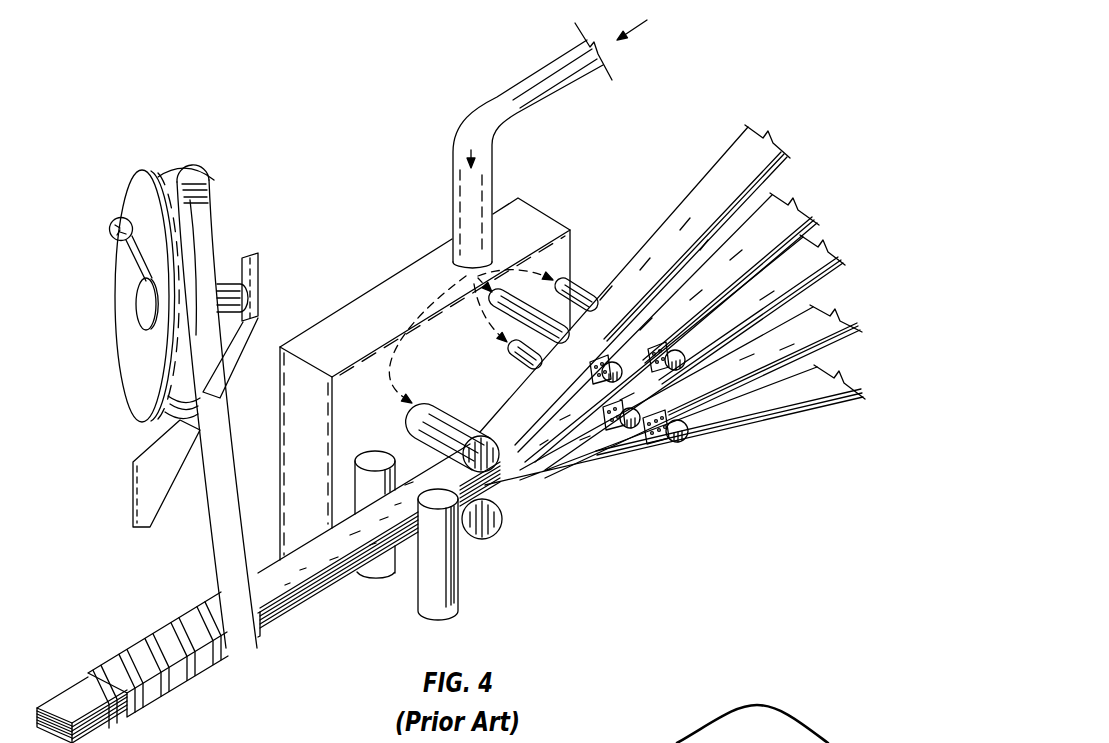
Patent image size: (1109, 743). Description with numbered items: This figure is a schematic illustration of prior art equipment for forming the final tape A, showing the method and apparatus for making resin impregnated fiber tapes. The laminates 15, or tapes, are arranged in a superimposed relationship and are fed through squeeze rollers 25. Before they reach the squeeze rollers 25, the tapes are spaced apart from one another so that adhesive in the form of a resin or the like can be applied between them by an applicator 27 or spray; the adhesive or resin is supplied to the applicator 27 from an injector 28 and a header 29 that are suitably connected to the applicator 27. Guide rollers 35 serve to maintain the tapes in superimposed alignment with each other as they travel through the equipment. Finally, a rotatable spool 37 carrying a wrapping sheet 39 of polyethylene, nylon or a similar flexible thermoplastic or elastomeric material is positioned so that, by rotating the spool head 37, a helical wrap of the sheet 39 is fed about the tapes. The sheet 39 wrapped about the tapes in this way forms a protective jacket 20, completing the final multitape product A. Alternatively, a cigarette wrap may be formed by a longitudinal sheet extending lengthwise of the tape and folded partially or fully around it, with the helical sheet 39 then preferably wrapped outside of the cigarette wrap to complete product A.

The laminates 15 is at (762, 145).
The protective jacket 20 is at (123, 657).
The squeeze rollers 25 is at (440, 408).
The applicator 27 is at (608, 382).
The injector 28 is at (568, 80).
The header 29 is at (535, 230).
The guide rollers 35 is at (378, 577).
The rotatable spool 37 is at (133, 381).
The wrapping sheet 39 is at (196, 188).
The final tape A is at (143, 628).